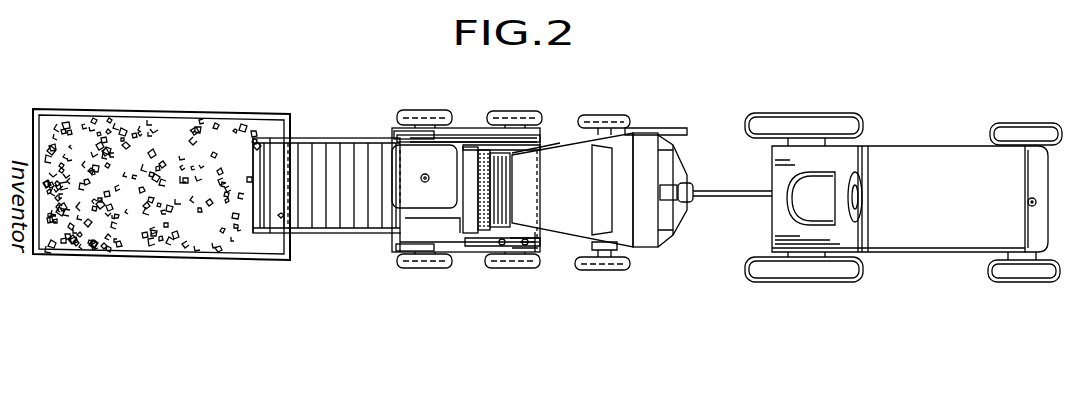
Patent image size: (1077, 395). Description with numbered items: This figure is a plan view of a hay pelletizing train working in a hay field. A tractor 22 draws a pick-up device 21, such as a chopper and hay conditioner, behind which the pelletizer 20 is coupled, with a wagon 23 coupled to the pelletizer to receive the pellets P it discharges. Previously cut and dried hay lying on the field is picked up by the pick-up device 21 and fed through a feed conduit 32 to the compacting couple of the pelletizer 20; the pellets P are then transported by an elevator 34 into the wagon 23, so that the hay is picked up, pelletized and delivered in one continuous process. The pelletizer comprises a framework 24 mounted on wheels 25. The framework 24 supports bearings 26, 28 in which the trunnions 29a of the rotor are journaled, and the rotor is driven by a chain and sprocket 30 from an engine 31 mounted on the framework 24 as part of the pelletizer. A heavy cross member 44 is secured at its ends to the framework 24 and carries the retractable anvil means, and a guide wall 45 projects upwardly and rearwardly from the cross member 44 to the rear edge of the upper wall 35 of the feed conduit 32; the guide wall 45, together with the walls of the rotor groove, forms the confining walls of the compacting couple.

The pellets P is at (67, 133).
The pelletizer 20 is at (376, 256).
The pick-up device 21 is at (646, 148).
The tractor 22 is at (893, 145).
The wagon 23 is at (133, 110).
The framework 24 is at (405, 140).
The wheels 25 is at (515, 115).
The bearing 26 is at (558, 120).
The bearing 28 is at (540, 245).
The trunnions 29a is at (535, 252).
The chain and sprocket 30 is at (468, 130).
The engine 31 is at (393, 148).
The feed conduit 32 is at (583, 175).
The elevator 34 is at (315, 153).
The upper wall 35 is at (540, 152).
The cross member 44 is at (486, 252).
The guide wall 45 is at (500, 193).